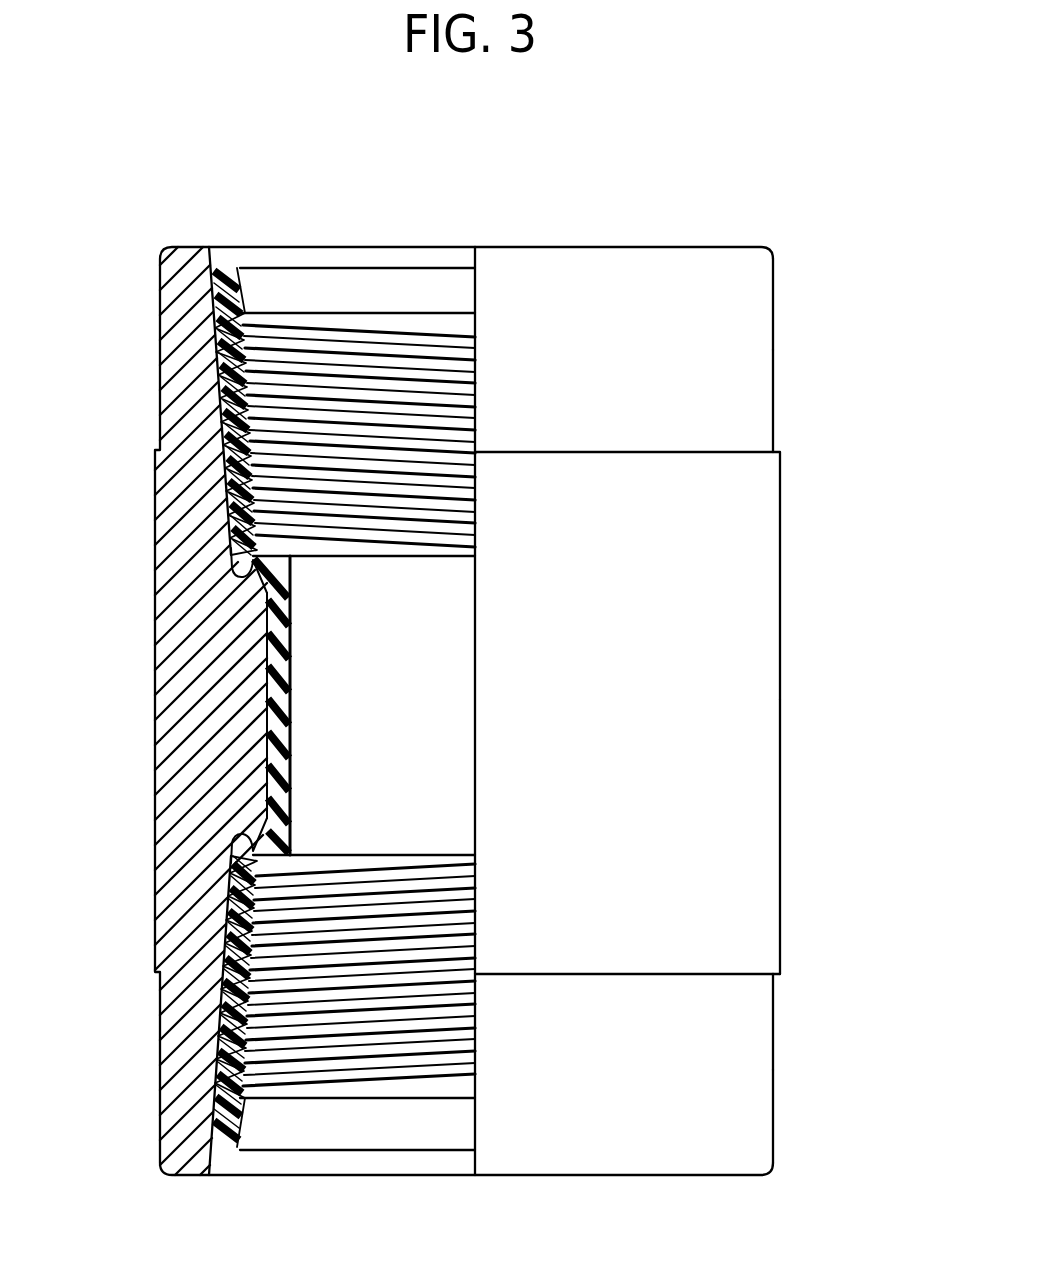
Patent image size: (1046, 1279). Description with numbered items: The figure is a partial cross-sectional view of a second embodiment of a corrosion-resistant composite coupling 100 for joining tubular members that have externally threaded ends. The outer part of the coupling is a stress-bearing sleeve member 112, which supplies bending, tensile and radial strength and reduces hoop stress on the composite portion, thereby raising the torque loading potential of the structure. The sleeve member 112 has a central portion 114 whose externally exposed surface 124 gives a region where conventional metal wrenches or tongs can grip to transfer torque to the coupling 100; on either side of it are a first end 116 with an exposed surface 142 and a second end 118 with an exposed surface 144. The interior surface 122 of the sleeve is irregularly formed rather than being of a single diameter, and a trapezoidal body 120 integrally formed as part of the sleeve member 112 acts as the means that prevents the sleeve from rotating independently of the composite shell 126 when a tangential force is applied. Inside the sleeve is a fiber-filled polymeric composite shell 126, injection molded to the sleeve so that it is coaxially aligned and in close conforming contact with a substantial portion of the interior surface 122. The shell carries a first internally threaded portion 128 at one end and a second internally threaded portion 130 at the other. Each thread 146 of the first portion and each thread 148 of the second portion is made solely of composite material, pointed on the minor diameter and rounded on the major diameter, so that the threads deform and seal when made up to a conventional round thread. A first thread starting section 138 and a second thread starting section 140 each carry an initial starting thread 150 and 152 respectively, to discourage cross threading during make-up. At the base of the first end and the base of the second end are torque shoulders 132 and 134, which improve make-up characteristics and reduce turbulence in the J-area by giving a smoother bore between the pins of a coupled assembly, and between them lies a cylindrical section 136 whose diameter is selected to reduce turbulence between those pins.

The corrosion-resistant composite coupling 100 is at (795, 350).
The stress-bearing sleeve member 112 is at (155, 648).
The central portion 114 is at (780, 882).
The first end 116 is at (775, 292).
The second end 118 is at (773, 1104).
The trapezoidal body 120 is at (290, 620).
The interior surface 122 is at (270, 718).
The externally exposed surface 124 is at (155, 810).
The fiber-filled polymeric composite shell 126 is at (290, 765).
The first internally threaded portion 128 is at (225, 366).
The second internally threaded portion 130 is at (222, 1062).
The torque shoulder 132 is at (300, 553).
The torque shoulder 134 is at (270, 818).
The cylindrical section 136 is at (450, 690).
The first thread starting section 138 is at (242, 280).
The second thread starting section 140 is at (240, 1133).
The exposed surface 142 is at (775, 397).
The exposed surface 144 is at (773, 1032).
The thread 146 is at (225, 412).
The thread 148 is at (222, 1038).
The initial starting thread 150 is at (465, 318).
The initial starting thread 152 is at (465, 1096).